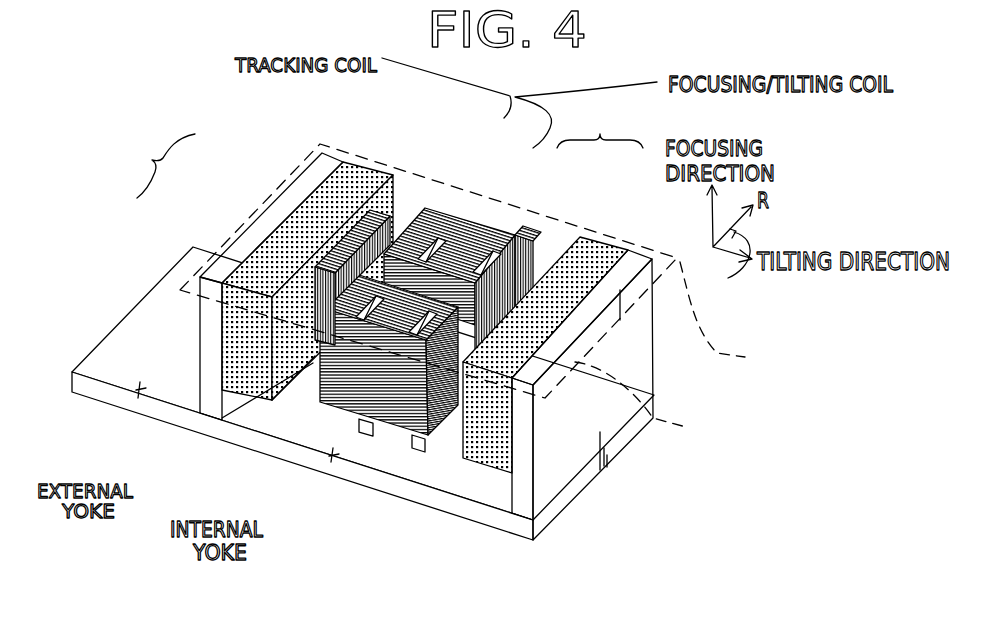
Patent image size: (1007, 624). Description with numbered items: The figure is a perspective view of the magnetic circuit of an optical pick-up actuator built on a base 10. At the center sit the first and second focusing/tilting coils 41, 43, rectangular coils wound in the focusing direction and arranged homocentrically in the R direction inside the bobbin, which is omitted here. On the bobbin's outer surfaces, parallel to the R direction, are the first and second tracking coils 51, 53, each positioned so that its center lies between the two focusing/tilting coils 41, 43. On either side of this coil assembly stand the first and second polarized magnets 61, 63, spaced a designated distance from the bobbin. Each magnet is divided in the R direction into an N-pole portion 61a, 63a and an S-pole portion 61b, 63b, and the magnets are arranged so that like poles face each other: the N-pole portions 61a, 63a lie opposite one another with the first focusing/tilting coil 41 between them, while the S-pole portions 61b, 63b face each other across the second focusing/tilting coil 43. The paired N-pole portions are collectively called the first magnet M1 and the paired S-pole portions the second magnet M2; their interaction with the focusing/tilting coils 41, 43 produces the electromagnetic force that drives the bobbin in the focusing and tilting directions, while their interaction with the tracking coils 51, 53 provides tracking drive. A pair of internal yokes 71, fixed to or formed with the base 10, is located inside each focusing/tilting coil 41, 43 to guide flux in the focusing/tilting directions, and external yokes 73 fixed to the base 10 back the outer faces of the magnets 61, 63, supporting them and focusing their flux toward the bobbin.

The base 10 is at (131, 340).
The first focusing/tilting coil 41 is at (477, 228).
The second focusing/tilting coil 43 is at (392, 405).
The first tracking coil 51 is at (518, 238).
The second tracking coil 53 is at (357, 192).
The first polarized magnet 61 is at (553, 292).
The N-pole portion of the first polarized magnet 61a is at (597, 265).
The S-pole portion of the first polarized magnet 61b is at (547, 270).
The second polarized magnet 63 is at (261, 266).
The N-pole portion of the second polarized magnet 63a is at (310, 192).
The S-pole portion of the second polarized magnet 63b is at (252, 266).
The internal yoke 71 is at (428, 236).
The external yoke 73 is at (213, 380).
The first magnet M1 is at (727, 318).
The second magnet M2 is at (646, 402).